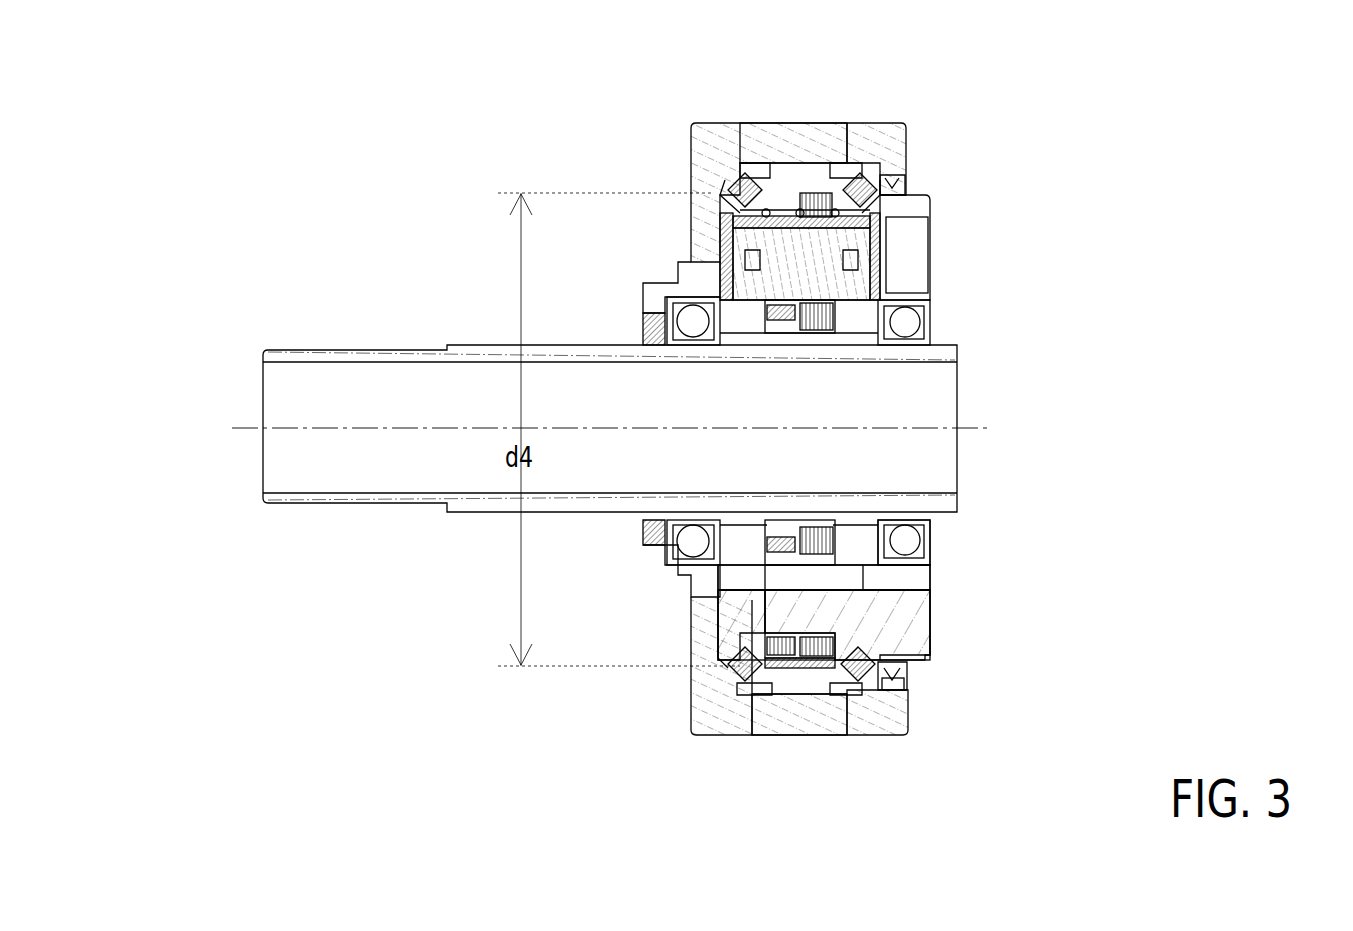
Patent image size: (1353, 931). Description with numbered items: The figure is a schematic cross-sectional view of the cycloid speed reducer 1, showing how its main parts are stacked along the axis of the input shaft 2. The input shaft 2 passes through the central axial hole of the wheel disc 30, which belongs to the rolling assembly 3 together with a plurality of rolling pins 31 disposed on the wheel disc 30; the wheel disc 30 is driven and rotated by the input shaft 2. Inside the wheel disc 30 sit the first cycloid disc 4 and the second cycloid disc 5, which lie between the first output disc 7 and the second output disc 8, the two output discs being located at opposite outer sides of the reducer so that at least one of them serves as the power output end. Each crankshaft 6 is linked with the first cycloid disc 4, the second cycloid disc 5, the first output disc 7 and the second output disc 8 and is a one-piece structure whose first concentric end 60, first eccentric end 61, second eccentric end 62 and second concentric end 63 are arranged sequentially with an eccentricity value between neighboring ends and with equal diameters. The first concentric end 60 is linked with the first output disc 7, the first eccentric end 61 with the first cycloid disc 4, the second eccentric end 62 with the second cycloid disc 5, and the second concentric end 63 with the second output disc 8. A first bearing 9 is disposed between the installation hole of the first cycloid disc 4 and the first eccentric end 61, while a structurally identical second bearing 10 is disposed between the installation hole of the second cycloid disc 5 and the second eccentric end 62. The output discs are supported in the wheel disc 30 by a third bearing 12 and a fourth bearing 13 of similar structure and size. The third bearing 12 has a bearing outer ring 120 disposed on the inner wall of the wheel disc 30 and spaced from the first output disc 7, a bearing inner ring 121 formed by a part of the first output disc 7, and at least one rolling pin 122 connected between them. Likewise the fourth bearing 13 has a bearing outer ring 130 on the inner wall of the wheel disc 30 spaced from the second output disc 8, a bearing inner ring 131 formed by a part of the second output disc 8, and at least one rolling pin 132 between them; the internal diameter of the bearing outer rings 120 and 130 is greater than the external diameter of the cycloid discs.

The cycloid speed reducer 1 is at (131, 107).
The input shaft 2 is at (405, 405).
The rolling assembly 3 is at (843, 110).
The first cycloid disc 4 is at (808, 160).
The second cycloid disc 5 is at (776, 205).
The crankshaft 6 is at (875, 225).
The first output disc 7 is at (905, 205).
The second output disc 8 is at (745, 235).
The first bearing 9 is at (880, 180).
The second bearing 10 is at (772, 210).
The third bearing 12 is at (1052, 683).
The fourth bearing 13 is at (1052, 542).
The wheel disc 30 is at (782, 150).
The rolling pins 31 is at (820, 700).
The first concentric end 60 is at (880, 270).
The first eccentric end 61 is at (930, 325).
The second eccentric end 62 is at (772, 298).
The second concentric end 63 is at (735, 300).
The bearing outer ring 120 is at (870, 720).
The bearing inner ring 121 is at (900, 665).
The rolling pin 122 is at (895, 690).
The bearing outer ring 130 is at (880, 620).
The bearing inner ring 131 is at (935, 545).
The rolling pin 132 is at (860, 590).